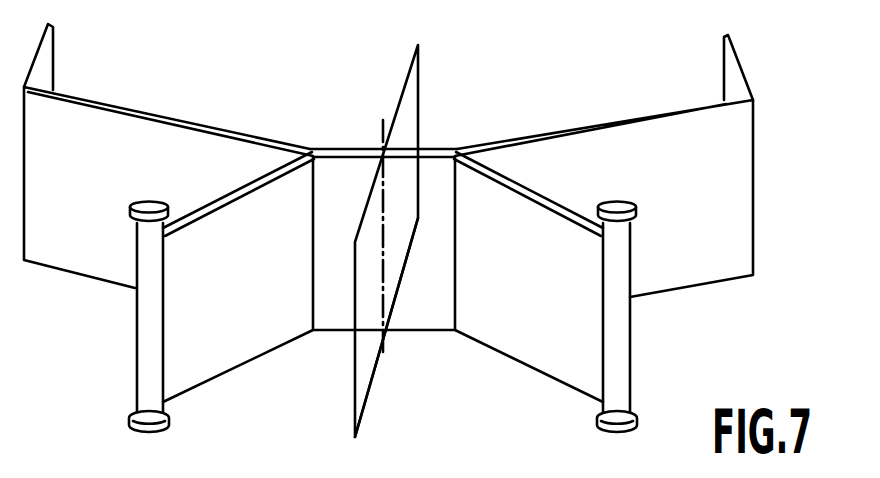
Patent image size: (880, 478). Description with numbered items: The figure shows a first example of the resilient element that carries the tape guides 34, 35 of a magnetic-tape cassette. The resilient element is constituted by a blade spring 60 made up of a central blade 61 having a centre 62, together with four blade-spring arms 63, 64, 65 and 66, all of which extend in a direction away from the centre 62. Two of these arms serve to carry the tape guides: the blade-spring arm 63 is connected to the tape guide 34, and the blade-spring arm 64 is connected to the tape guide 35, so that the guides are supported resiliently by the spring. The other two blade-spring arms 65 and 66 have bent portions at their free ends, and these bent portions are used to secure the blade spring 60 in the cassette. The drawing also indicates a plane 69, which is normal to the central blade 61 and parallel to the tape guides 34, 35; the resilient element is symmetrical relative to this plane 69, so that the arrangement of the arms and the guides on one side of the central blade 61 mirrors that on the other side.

The blade spring 60 is at (742, 63).
The central blade 61 is at (371, 185).
The centre 62 is at (385, 235).
The blade-spring arm 63 is at (230, 353).
The blade-spring arm 64 is at (522, 345).
The blade-spring arm 65 is at (70, 257).
The blade-spring arm 66 is at (690, 273).
The tape guide 34 is at (145, 378).
The tape guide 35 is at (617, 381).
The plane 69 is at (363, 393).